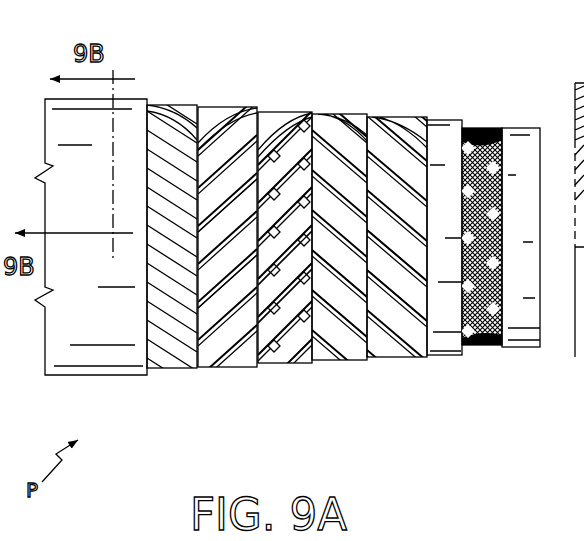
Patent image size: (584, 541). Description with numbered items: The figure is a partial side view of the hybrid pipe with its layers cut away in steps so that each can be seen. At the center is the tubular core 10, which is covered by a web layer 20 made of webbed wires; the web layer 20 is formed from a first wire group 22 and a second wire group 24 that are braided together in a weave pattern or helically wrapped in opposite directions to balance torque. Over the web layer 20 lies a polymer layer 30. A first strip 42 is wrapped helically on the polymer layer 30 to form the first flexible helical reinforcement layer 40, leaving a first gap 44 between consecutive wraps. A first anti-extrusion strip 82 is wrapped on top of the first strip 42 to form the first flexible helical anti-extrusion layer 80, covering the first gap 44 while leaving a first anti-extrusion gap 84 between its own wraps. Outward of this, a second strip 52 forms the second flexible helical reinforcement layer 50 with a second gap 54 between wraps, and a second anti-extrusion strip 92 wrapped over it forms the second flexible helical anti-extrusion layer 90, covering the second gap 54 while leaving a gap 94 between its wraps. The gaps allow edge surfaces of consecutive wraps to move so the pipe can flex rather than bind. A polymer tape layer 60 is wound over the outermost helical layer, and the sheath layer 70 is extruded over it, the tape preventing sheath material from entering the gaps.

The tubular core 10 is at (519, 126).
The web layer 20 is at (483, 126).
The first wire group 22 is at (500, 147).
The second wire group 24 is at (502, 177).
The polymer layer 30 is at (441, 118).
The first flexible helical reinforcement layer 40 is at (394, 113).
The first strip 42 is at (408, 312).
The first gap 44 is at (390, 312).
The second flexible helical reinforcement layer 50 is at (288, 111).
The second strip 52 is at (292, 332).
The second gap 54 is at (266, 297).
The polymer tape layer 60 is at (188, 103).
The sheath layer 70 is at (143, 98).
The first flexible helical anti-extrusion layer 80 is at (349, 110).
The first anti-extrusion strip 82 is at (348, 325).
The first anti-extrusion gap 84 is at (332, 290).
The second flexible helical anti-extrusion layer 90 is at (225, 104).
The second anti-extrusion strip 92 is at (239, 317).
The gap 94 is at (213, 272).